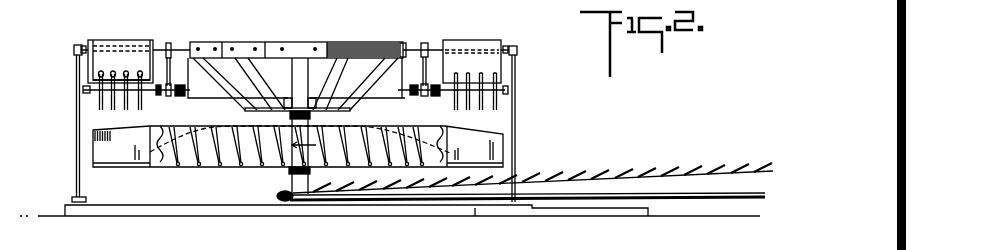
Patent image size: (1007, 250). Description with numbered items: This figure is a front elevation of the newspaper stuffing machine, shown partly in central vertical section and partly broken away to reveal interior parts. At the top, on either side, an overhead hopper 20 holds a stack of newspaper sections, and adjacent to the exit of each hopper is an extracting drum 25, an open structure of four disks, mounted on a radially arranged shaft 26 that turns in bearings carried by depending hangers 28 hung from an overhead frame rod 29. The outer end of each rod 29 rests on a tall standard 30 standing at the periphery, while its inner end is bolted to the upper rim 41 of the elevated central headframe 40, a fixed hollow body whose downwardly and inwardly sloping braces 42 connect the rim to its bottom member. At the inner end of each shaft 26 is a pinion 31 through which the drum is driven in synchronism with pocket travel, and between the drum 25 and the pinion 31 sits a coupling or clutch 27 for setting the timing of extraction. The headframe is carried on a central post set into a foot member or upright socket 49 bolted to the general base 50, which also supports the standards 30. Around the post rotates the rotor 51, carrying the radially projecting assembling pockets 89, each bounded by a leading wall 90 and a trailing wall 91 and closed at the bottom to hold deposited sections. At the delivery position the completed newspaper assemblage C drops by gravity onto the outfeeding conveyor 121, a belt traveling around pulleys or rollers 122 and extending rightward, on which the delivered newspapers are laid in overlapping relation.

The overhead hopper 20 is at (113, 40).
The extracting drum 25 is at (100, 108).
The shaft 26 is at (93, 94).
The coupling or clutch 27 is at (187, 91).
The depending hangers 28 is at (76, 61).
The overhead frame rod 29 is at (167, 43).
The tall standard 30 is at (76, 148).
The pinion 31 is at (411, 86).
The headframe 40 is at (312, 24).
The upper rim 41 is at (233, 41).
The sloping side pieces or braces 42 is at (294, 82).
The foot member or upright socket 49 is at (290, 180).
The general base 50 is at (166, 205).
The rotor 51 is at (233, 153).
The assembling pockets 89 is at (200, 130).
The leading wall 90 is at (362, 133).
The trailing wall 91 is at (125, 148).
The outfeeding conveyor 121 is at (444, 200).
The pulleys or rollers 122 is at (295, 204).
The completed newspaper assemblage C is at (375, 192).